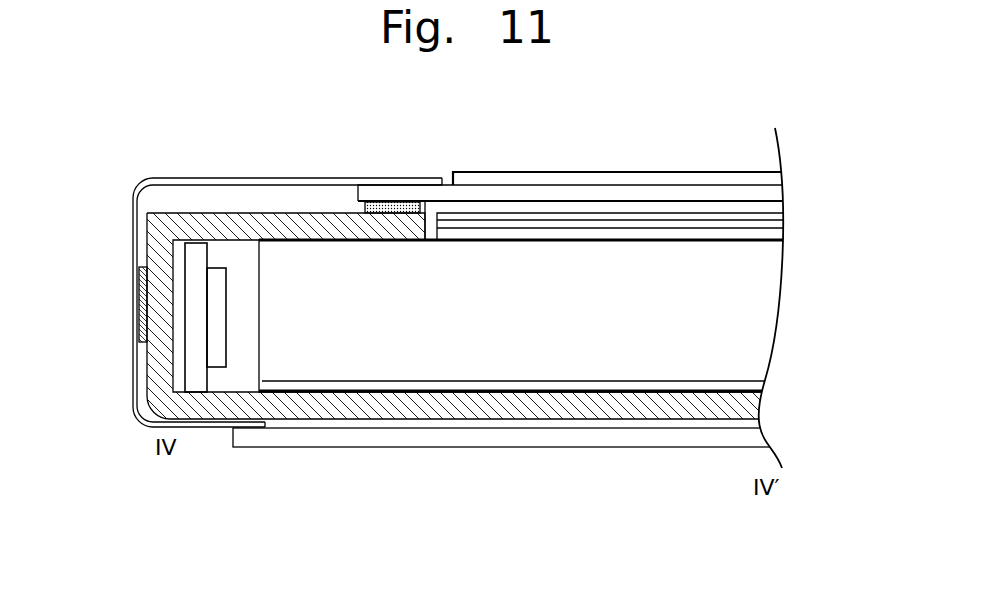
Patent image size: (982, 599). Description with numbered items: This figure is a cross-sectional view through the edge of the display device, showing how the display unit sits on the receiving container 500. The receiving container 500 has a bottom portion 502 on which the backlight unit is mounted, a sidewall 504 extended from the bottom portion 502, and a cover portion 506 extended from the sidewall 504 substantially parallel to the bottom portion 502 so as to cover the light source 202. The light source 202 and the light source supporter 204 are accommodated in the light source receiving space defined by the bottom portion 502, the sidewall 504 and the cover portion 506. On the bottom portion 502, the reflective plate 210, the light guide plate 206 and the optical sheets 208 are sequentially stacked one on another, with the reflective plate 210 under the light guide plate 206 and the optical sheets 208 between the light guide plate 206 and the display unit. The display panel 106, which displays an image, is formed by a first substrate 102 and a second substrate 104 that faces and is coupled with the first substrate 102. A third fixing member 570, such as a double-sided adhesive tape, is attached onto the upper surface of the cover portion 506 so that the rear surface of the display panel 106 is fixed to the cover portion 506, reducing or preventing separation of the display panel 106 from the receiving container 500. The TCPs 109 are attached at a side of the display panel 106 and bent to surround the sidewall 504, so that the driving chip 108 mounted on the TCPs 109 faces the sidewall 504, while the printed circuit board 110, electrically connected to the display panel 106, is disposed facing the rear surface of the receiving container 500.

The first substrate 102 is at (770, 179).
The second substrate 104 is at (770, 193).
The display panel 106 is at (631, 180).
The driving chip 108 is at (140, 311).
The TCPs 109 is at (134, 236).
The printed circuit board 110 is at (578, 443).
The light source 202 is at (213, 347).
The light source supporter 204 is at (193, 282).
The light guide plate 206 is at (752, 312).
The optical sheets 208 is at (787, 213).
The reflective plate 210 is at (752, 388).
The receiving container 500 is at (458, 383).
The bottom portion 502 is at (483, 454).
The sidewall 504 is at (158, 372).
The cover portion 506 is at (303, 232).
The third fixing member 570 is at (393, 204).